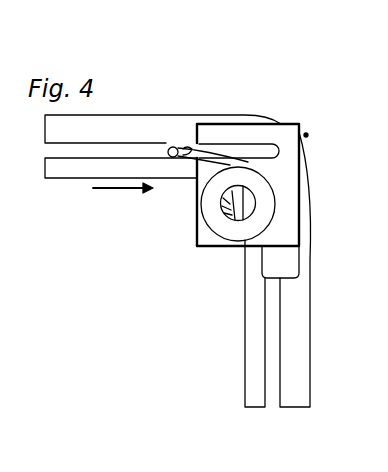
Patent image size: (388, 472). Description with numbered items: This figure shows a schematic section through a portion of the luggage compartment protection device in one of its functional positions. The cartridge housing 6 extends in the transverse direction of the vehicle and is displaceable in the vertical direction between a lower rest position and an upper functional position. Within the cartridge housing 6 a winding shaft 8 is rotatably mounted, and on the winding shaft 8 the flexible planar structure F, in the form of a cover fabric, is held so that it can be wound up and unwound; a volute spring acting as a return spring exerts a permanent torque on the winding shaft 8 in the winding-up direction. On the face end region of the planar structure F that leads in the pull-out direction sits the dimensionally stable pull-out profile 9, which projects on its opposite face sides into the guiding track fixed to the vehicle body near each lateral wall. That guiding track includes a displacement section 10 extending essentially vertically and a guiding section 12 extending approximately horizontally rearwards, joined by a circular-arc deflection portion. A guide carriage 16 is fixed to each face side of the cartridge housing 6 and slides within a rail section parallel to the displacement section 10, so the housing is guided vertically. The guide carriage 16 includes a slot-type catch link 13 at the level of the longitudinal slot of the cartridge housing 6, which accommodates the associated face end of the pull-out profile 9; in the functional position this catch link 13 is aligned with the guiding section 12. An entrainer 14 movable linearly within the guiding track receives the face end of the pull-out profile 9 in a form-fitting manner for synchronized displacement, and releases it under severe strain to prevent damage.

The cartridge housing 6 is at (308, 134).
The winding shaft 8 is at (254, 193).
The pull-out profile 9 is at (174, 146).
The displacement section 10 is at (270, 347).
The guiding section 12 is at (67, 132).
The catch link 13 is at (261, 147).
The entrainer 14 is at (153, 152).
The guide carriage 16 is at (290, 266).
The planar structure F is at (183, 162).